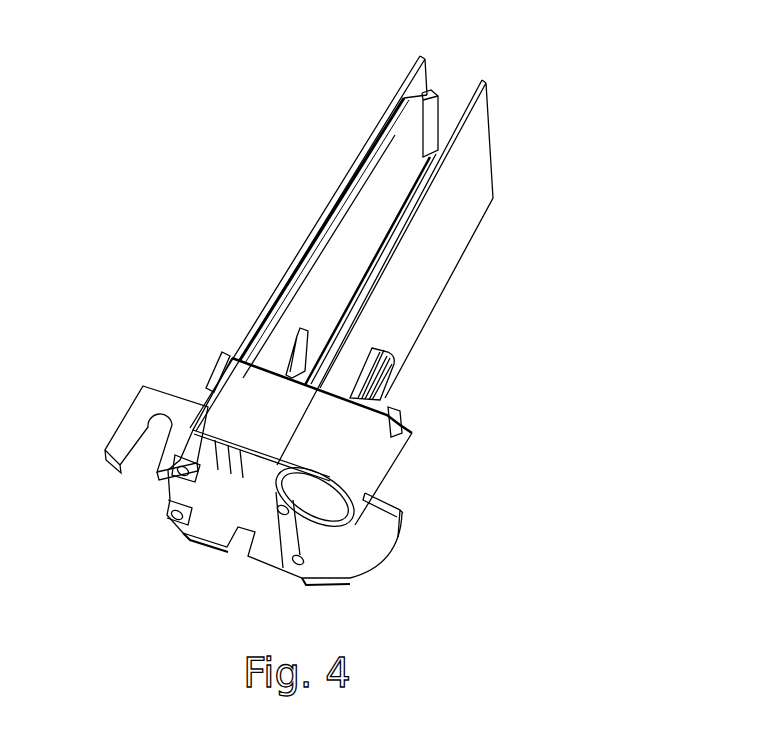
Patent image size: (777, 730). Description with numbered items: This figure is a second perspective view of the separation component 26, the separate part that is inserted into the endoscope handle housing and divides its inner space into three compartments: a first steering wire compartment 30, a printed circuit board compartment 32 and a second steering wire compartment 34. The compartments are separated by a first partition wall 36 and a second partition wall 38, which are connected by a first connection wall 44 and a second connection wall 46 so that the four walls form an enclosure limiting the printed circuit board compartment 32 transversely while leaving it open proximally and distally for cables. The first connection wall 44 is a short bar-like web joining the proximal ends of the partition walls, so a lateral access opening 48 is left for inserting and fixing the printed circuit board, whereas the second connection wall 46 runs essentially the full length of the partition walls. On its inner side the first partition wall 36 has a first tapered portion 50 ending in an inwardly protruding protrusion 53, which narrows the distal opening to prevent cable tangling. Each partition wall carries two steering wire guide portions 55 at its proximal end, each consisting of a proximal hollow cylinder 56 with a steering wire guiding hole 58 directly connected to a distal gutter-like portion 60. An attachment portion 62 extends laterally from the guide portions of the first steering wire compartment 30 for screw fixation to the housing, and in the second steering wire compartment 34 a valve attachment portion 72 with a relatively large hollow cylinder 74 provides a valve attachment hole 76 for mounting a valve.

The separation component 26 is at (326, 324).
The first steering wire compartment 30 is at (372, 232).
The printed circuit board compartment 32 is at (372, 232).
The second steering wire compartment 34 is at (289, 396).
The first partition wall 36 is at (393, 98).
The second partition wall 38 is at (477, 175).
The first connection wall 44 is at (248, 405).
The second connection wall 46 is at (240, 510).
The access opening 48 is at (350, 248).
The first tapered portion 50 is at (395, 183).
The protrusion 53 is at (430, 92).
The steering wire guide portion 55 is at (210, 374).
The proximal hollow cylinder 56 is at (195, 438).
The steering wire guiding hole 58 is at (178, 470).
The distal gutter-like portion 60 is at (375, 377).
The attachment portion 62 is at (100, 440).
The valve attachment portion 72 is at (388, 541).
The hollow cylinder 74 is at (380, 535).
The valve attachment hole 76 is at (325, 503).